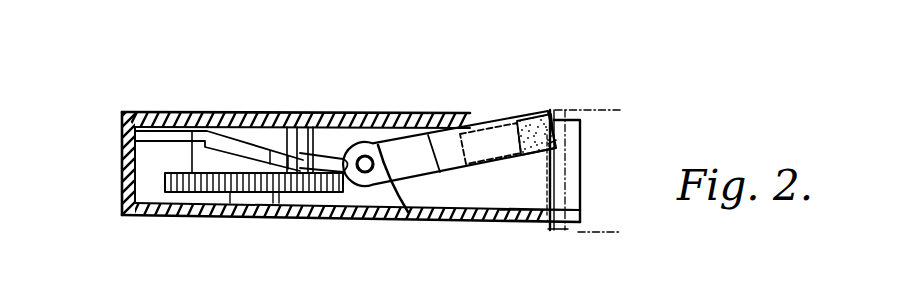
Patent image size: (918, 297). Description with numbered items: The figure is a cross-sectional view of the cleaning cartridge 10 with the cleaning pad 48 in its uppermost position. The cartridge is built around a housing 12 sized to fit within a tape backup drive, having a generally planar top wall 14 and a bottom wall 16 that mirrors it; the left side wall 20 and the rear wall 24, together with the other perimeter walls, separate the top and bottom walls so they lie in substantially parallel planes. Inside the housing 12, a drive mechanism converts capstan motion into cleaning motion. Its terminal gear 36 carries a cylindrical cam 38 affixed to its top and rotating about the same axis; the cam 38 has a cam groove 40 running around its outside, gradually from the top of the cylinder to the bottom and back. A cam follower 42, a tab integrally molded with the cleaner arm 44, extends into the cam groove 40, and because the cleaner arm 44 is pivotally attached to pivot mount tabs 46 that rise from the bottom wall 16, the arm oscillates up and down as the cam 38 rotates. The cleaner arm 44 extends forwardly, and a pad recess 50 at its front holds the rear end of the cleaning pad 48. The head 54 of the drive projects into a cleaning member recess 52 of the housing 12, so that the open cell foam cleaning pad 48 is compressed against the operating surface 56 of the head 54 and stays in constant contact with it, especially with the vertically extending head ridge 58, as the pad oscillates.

The cleaning cartridge 10 is at (150, 80).
The housing 12 is at (321, 167).
The top wall 14 is at (350, 114).
The bottom wall 16 is at (278, 205).
The left side wall 20 is at (478, 198).
The rear wall 24 is at (122, 163).
The terminal gear 36 is at (255, 187).
The cam 38 is at (213, 167).
The cam groove 40 is at (138, 133).
The cam follower 42 is at (321, 188).
The cleaner arm 44 is at (417, 168).
The pivot mount tabs 46 is at (375, 197).
The cleaning pad 48 is at (557, 140).
The pad recess 50 is at (478, 135).
The cleaning member recess 52 is at (523, 216).
The head 54 is at (590, 108).
The operating surface 56 is at (541, 101).
The head ridge 58 is at (555, 108).